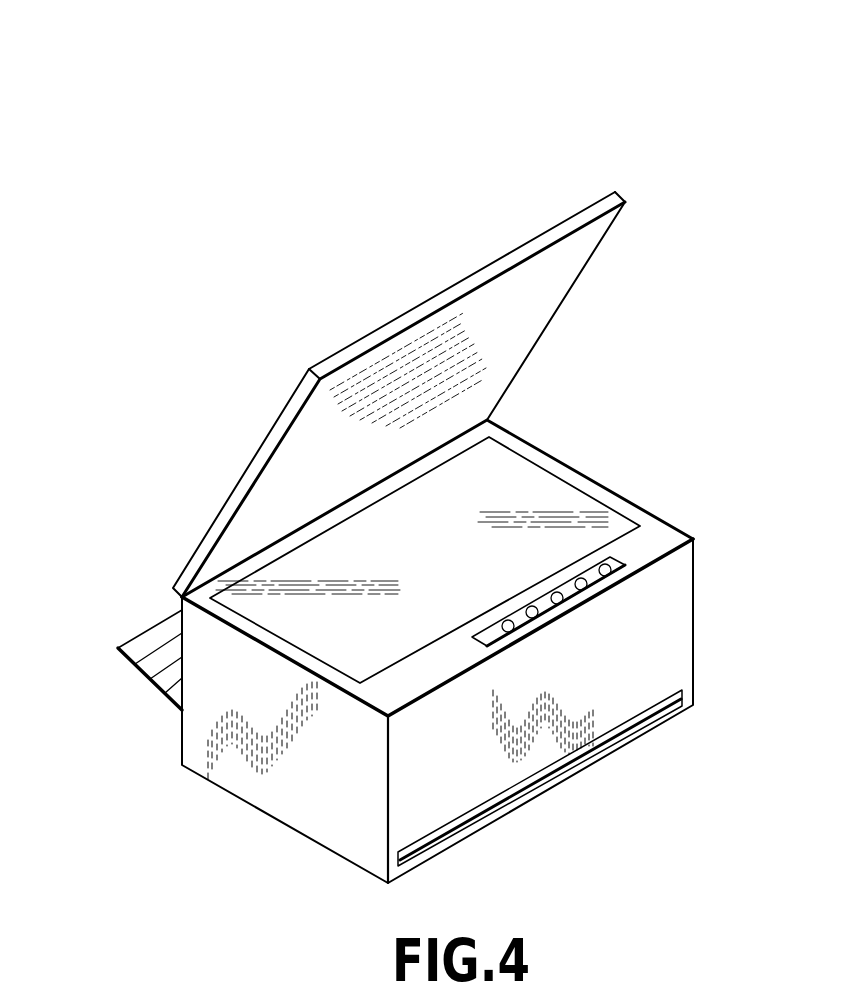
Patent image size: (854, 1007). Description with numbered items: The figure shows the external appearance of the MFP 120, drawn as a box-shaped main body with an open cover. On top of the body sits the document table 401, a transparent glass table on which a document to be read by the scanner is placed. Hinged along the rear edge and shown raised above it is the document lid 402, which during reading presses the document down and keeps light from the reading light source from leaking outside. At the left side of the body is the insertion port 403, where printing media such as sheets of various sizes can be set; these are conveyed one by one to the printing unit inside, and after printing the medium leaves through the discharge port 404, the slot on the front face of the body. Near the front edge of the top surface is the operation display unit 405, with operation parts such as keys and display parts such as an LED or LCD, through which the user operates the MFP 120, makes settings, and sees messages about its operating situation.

The MFP 120 is at (637, 110).
The document table 401 is at (561, 505).
The document lid 402 is at (350, 342).
The insertion port 403 is at (153, 638).
The discharge port 404 is at (553, 767).
The operation display unit 405 is at (572, 577).